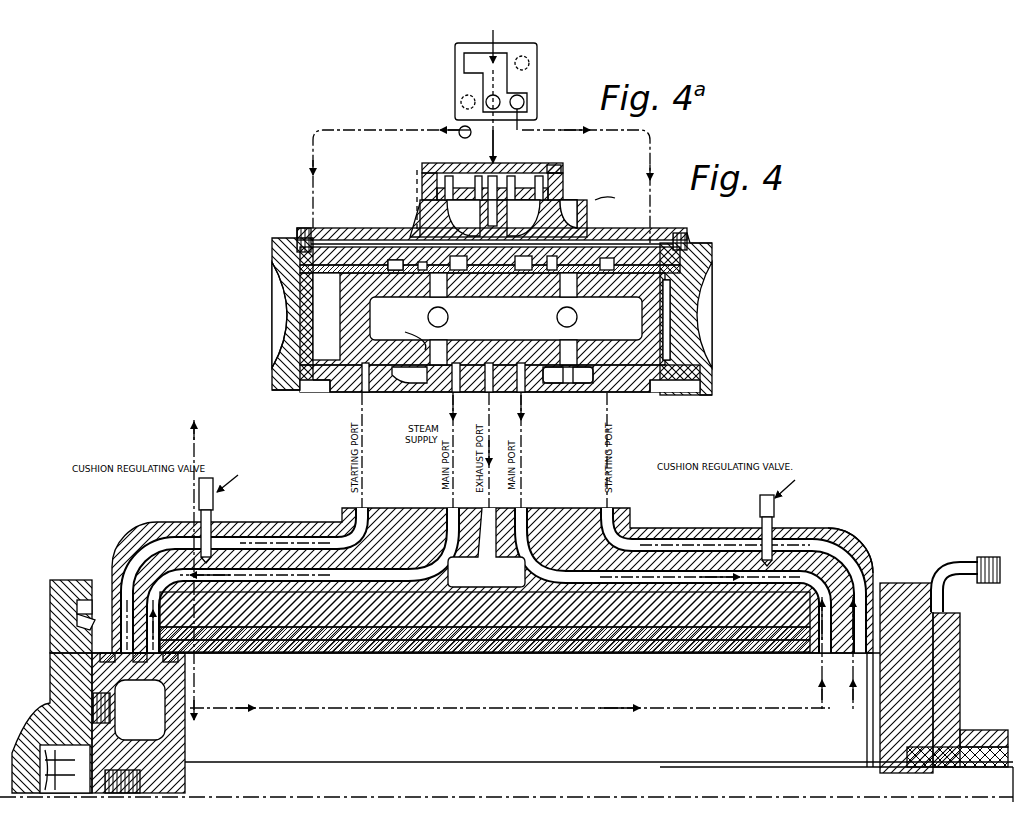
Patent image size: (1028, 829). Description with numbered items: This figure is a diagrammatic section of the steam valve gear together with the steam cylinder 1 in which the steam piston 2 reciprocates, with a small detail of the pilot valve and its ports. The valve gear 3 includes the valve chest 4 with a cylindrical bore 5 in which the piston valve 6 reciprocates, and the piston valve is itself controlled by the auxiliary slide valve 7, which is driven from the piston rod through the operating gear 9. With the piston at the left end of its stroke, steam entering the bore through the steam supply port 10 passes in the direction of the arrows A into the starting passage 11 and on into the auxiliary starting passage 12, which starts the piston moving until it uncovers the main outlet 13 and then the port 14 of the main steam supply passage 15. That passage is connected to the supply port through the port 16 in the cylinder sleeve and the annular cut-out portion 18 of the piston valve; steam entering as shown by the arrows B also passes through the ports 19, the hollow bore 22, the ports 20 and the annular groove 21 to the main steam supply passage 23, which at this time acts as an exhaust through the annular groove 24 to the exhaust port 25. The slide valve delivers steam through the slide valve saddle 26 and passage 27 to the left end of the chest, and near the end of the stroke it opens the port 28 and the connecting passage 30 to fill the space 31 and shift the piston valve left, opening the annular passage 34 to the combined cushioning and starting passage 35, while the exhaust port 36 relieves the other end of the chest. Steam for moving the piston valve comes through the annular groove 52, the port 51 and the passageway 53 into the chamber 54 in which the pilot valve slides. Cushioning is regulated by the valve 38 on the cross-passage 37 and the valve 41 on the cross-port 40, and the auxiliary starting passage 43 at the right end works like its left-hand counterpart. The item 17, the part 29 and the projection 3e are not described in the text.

In FIG. 4, the steam cylinder 1 is at (835, 748).
In FIG. 4, the steam piston 2 is at (182, 690).
In FIG. 4, the valve gear 3 is at (712, 305).
In FIG. 4, the chest cover projection 3e is at (600, 200).
In FIG. 4, the valve chest 4 is at (313, 385).
In FIG. 4, the cylindrical bore 5 is at (335, 380).
In FIG. 4, the piston valve 6 is at (635, 380).
In FIG. 4, the auxiliary slide valve 7 is at (527, 198).
In FIG. 4, the operating gear 9 is at (199, 568).
In FIG. 4, the steam supply port 10 is at (410, 385).
In FIG. 4, the starting passage 11 is at (283, 535).
In FIG. 4, the auxiliary starting passage 12 is at (70, 628).
In FIG. 4, the main outlet 13 is at (90, 660).
In FIG. 4, the port 14 is at (172, 662).
In FIG. 4, the main steam supply passage 15 is at (390, 522).
In FIG. 4, the port 16 is at (408, 331).
In FIG. 4, the valve chest end wall 17 is at (290, 300).
In FIG. 4, the annular cut-out portion 18 is at (455, 350).
In FIG. 4, the ports 19 is at (430, 317).
In FIG. 4, the ports 20 is at (578, 318).
In FIG. 4, the annular groove 21 is at (575, 290).
In FIG. 4, the hollow bore 22 is at (705, 285).
In FIG. 4, the main steam supply passage 23 is at (650, 530).
In FIG. 4, the annular groove 24 is at (535, 395).
In FIG. 4, the exhaust port 25 is at (540, 520).
In FIG. 4A, the slide valve saddle 26 is at (525, 78).
In FIG. 4, the slide valve saddle 26 is at (493, 160).
In FIG. 4, the passage 27 is at (350, 244).
In FIG. 4A, the port 28 is at (529, 63).
In FIG. 4, the port 28 is at (560, 185).
In FIG. 4, the chest cover 29 is at (625, 243).
In FIG. 4, the connecting passage 30 is at (690, 237).
In FIG. 4, the space 31 is at (655, 260).
In FIG. 4, the annular passage 34 is at (578, 392).
In FIG. 4, the combined cushioning and starting passage 35 is at (700, 545).
In FIG. 4A, the exhaust port 36 is at (517, 102).
In FIG. 4, the cross-passage 37 is at (828, 532).
In FIG. 4, the valve 38 is at (778, 530).
In FIG. 4, the cross-port 40 is at (240, 530).
In FIG. 4, the valve 41 is at (195, 515).
In FIG. 4, the auxiliary starting passage 43 is at (940, 640).
In FIG. 4, the port 51 is at (410, 260).
In FIG. 4, the annular groove 52 is at (395, 262).
In FIG. 4, the passageway 53 is at (412, 188).
In FIG. 4, the chamber 54 is at (568, 210).
In FIG. 4, the arrows A is at (364, 408).
In FIG. 4, the arrows B is at (452, 488).